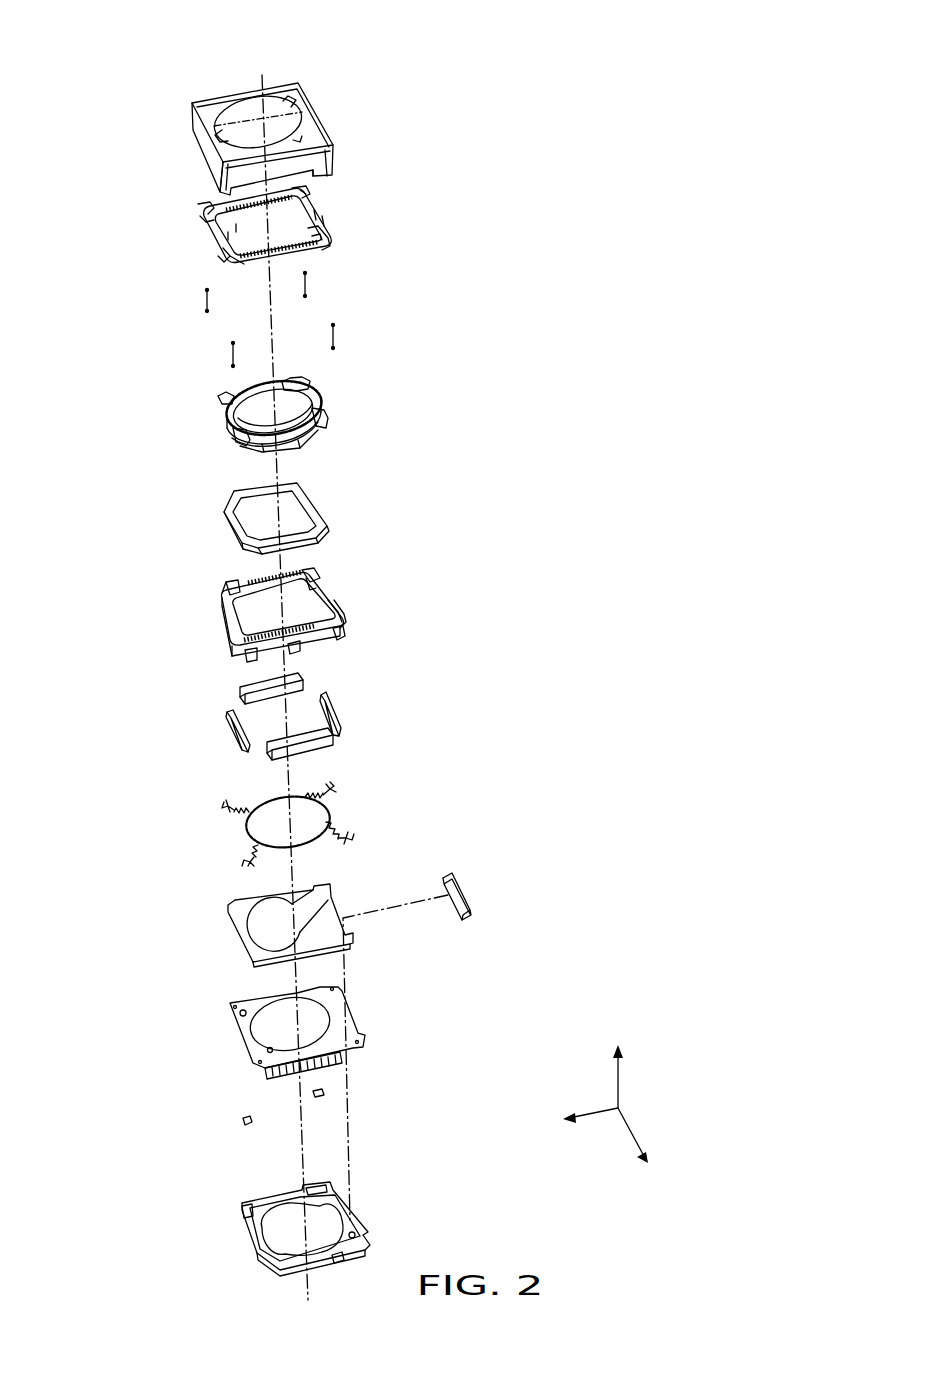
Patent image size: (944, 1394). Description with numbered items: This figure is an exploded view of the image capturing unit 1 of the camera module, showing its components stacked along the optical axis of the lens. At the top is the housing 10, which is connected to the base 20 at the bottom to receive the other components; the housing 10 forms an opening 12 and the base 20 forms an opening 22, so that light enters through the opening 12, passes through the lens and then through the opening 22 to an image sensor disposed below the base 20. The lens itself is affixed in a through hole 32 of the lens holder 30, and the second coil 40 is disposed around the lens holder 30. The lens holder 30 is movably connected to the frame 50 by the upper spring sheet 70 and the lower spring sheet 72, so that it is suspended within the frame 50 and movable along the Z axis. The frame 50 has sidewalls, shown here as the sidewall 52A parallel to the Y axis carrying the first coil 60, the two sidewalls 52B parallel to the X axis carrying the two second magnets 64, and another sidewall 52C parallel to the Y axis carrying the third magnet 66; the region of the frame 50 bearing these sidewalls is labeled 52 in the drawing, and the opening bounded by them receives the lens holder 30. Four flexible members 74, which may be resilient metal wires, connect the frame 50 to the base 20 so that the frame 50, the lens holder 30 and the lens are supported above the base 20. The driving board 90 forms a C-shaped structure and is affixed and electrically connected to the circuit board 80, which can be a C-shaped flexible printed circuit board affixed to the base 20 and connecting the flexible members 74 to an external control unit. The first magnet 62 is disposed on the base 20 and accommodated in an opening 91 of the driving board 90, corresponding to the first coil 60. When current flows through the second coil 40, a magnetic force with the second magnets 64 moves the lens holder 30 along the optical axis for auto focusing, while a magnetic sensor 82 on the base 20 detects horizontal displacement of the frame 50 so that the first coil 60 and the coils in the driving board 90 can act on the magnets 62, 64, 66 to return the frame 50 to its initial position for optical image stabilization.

The image capturing unit 1 is at (32, 105).
The housing 10 is at (267, 139).
The opening 12 is at (291, 124).
The base 20 is at (242, 1205).
The opening 22 is at (284, 1222).
The lens holder 30 is at (256, 402).
The through hole 32 is at (294, 414).
The second coil 40 is at (229, 523).
The frame 50 is at (276, 609).
The frame opening 52 is at (303, 604).
The sidewall 52A is at (337, 600).
The sidewalls 52B is at (238, 597).
The sidewall 52C is at (240, 647).
The first coil 60 is at (337, 719).
The first magnet 62 is at (463, 890).
The second magnet 64 is at (244, 688).
The third magnet 66 is at (231, 730).
The upper spring sheet 70 is at (213, 238).
The lower spring sheet 72 is at (244, 830).
The flexible members 74 is at (309, 283).
The circuit board 80 is at (238, 1018).
The magnetic sensor 82 is at (244, 1120).
The driving board 90 is at (257, 909).
The opening 91 is at (330, 908).